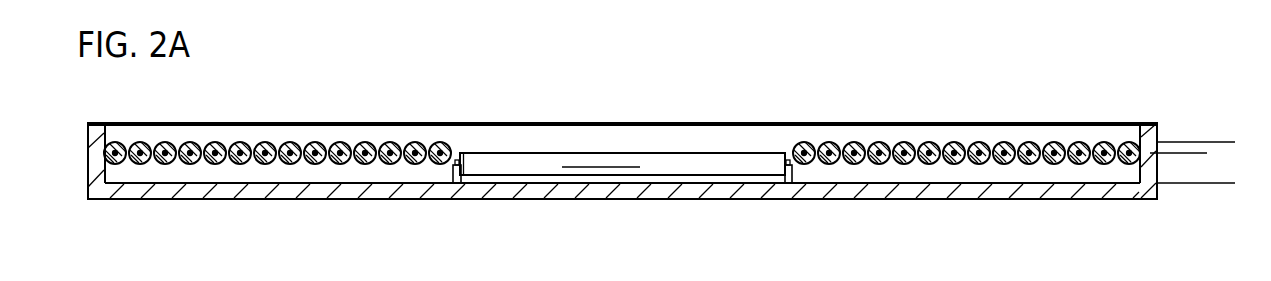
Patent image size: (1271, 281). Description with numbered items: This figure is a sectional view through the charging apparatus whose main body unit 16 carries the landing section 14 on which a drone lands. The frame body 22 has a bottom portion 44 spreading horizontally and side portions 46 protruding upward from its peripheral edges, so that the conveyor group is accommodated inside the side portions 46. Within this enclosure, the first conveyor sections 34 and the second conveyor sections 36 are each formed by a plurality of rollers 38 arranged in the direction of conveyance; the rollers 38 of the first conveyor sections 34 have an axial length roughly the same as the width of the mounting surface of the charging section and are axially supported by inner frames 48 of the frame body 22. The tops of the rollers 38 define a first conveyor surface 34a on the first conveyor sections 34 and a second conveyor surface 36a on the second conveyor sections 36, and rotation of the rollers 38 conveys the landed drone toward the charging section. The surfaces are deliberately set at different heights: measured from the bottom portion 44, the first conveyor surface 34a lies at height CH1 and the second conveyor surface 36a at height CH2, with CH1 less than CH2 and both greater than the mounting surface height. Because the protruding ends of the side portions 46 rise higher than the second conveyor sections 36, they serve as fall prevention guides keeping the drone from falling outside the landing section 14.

The landing section 14 is at (263, 138).
The main body unit 16 is at (455, 86).
The frame body 22 is at (163, 123).
The first conveyor section 34 is at (541, 167).
The first conveyor surface 34a is at (604, 153).
The second conveyor section 36 is at (316, 164).
The second conveyor surface 36a is at (903, 142).
The roller 38 is at (801, 166).
The bottom portion 44 is at (664, 187).
The side portion 46 is at (98, 160).
The inner frame 48 is at (455, 171).
The height position of the first conveyor surfaces CH1 is at (1177, 153).
The height position of the second conveyor surfaces CH2 is at (1230, 142).